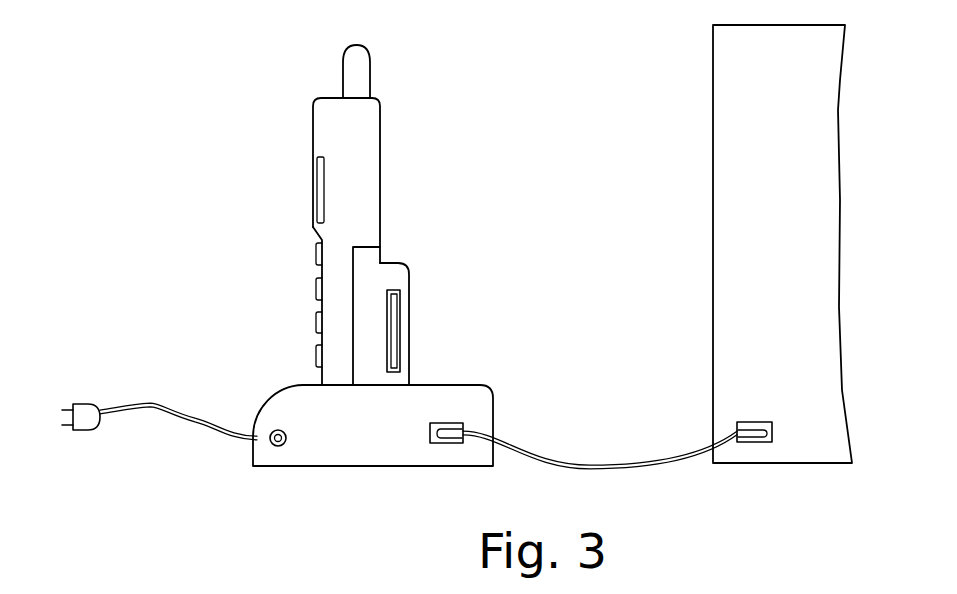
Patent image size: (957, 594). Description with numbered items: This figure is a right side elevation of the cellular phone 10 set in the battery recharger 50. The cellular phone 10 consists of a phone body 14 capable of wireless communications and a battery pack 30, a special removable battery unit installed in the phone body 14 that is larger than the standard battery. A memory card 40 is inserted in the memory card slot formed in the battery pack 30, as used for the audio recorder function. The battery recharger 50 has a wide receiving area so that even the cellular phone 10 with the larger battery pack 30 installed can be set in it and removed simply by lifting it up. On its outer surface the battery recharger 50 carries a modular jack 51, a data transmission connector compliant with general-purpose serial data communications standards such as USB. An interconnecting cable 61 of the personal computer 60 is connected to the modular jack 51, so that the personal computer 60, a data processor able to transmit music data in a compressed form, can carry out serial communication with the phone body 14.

The cellular phone 10 is at (290, 145).
The phone body 14 is at (372, 173).
The battery pack 30 is at (380, 263).
The memory card 40 is at (394, 330).
The battery recharger 50 is at (290, 400).
The modular jack 51 is at (447, 422).
The personal computer 60 is at (730, 127).
The interconnecting cable 61 is at (607, 463).